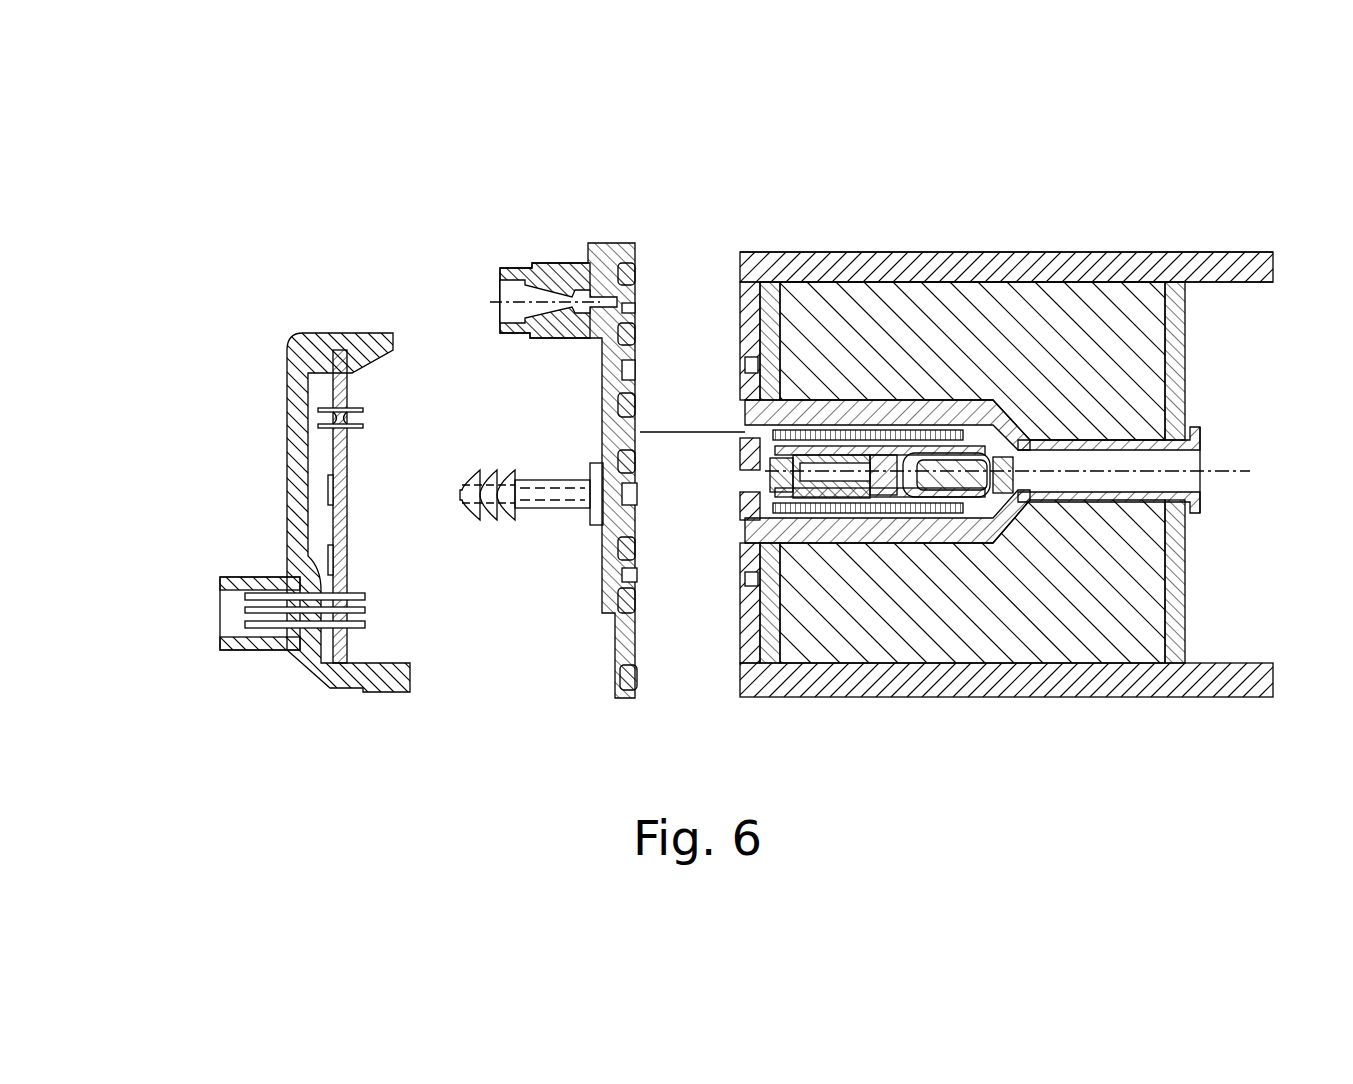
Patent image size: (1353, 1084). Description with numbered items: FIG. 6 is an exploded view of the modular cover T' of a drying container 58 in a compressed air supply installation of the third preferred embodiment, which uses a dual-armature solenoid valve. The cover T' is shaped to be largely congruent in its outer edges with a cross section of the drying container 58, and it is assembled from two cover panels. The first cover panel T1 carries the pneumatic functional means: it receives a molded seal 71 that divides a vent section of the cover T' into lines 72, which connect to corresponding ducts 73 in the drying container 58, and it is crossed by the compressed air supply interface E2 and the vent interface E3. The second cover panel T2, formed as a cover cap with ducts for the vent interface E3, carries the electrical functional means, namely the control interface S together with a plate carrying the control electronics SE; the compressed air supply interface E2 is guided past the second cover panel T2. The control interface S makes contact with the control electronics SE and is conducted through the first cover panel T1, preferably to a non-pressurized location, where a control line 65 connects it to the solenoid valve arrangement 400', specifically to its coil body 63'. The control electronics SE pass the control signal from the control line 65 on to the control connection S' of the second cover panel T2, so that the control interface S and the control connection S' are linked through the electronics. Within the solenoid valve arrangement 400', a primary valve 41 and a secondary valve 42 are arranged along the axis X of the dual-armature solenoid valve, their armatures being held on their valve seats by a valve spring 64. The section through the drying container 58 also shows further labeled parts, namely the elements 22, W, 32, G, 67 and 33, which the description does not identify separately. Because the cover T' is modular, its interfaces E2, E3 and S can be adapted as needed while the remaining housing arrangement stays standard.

The drying container 58 is at (1082, 250).
The housing wall 22 is at (995, 280).
The wall W is at (923, 262).
The secondary valve 42 is at (840, 398).
The lower body block 32 is at (800, 542).
The primary valve 41 is at (1005, 432).
The valve spring 64 is at (815, 430).
The coil body 63' is at (880, 415).
The solenoid valve arrangement 400' is at (879, 413).
The valve seat G is at (960, 425).
The outlet axis element 67 is at (1105, 489).
The outlet tube 33 is at (1028, 465).
The axis X is at (1213, 471).
The ducts 73 is at (748, 366).
The control line 65 is at (742, 440).
The first cover panel T1 is at (605, 243).
The compressed air supply interface E2 is at (500, 296).
The molded seal 71 is at (636, 278).
The lines 72 is at (636, 370).
The vent interface E3 is at (462, 490).
The second cover panel T2 is at (287, 400).
The control electronics SE is at (347, 493).
The control interface S is at (305, 434).
The control connection S' is at (242, 625).
The cover T' is at (337, 169).